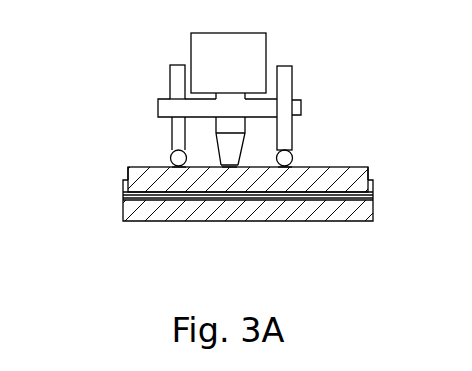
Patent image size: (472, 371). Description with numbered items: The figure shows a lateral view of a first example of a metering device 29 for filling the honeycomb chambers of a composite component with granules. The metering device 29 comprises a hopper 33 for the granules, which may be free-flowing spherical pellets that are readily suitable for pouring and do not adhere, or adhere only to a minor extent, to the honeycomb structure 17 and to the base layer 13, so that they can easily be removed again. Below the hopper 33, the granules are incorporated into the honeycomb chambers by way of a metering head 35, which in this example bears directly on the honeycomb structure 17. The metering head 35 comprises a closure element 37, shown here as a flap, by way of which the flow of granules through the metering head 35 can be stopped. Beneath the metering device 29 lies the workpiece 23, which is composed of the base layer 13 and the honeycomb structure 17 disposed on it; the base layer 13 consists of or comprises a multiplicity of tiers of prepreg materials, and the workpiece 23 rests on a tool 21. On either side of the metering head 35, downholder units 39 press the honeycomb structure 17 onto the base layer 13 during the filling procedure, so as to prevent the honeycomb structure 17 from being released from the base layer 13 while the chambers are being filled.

The metering device 29 is at (188, 96).
The hopper 33 is at (242, 73).
The metering head 35 is at (220, 152).
The honeycomb structure 17 is at (128, 168).
The workpiece 23 is at (239, 221).
The base layer 13 is at (372, 196).
The tool 21 is at (142, 208).
The closure element 37 is at (230, 168).
The downholder units 39 is at (189, 168).